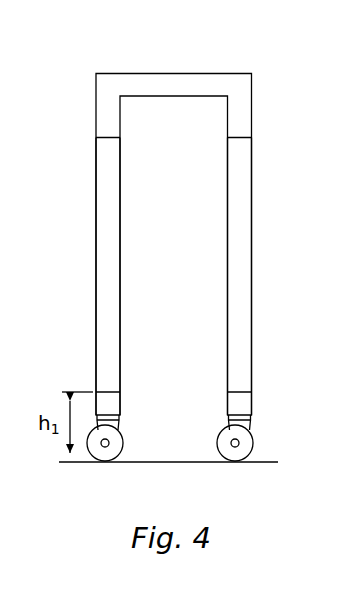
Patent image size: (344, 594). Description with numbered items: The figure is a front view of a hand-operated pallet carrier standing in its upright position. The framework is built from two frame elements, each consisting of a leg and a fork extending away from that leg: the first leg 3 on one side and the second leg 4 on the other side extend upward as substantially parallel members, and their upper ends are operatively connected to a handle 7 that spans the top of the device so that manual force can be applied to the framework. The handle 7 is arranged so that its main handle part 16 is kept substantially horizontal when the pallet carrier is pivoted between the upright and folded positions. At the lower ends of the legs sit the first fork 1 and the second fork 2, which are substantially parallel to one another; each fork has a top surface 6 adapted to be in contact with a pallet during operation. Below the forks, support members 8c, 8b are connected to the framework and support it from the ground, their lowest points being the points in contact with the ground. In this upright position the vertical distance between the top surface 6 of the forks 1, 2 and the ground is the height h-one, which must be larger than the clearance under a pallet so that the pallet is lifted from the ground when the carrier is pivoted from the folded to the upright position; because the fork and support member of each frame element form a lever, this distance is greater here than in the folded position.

The handle 7 is at (137, 64).
The main handle part 16 is at (166, 84).
The second leg 4 is at (108, 235).
The first leg 3 is at (240, 233).
The top surface 6 is at (239, 391).
The second fork 2 is at (115, 405).
The first fork 1 is at (245, 405).
The support member 8c is at (108, 457).
The support member 8b is at (238, 457).